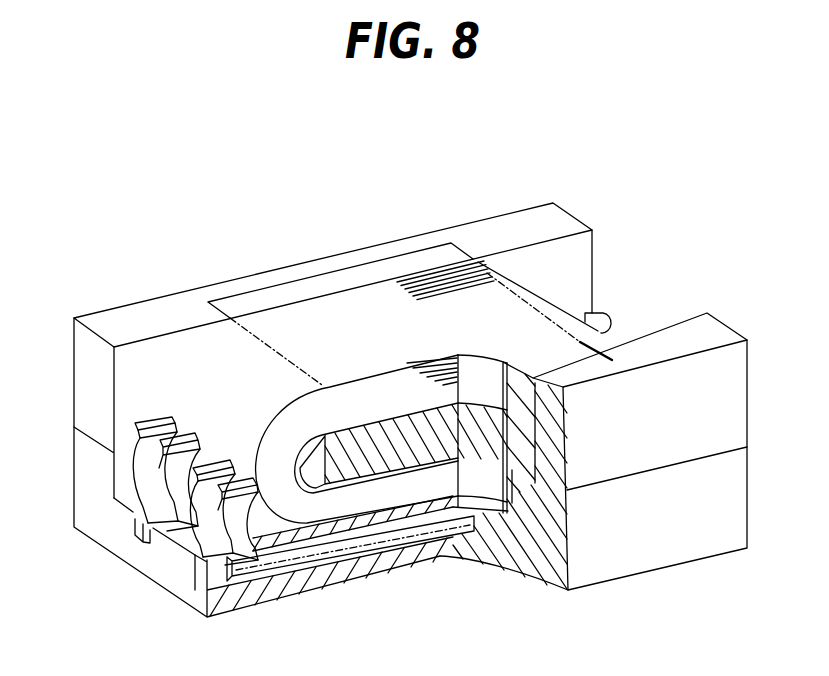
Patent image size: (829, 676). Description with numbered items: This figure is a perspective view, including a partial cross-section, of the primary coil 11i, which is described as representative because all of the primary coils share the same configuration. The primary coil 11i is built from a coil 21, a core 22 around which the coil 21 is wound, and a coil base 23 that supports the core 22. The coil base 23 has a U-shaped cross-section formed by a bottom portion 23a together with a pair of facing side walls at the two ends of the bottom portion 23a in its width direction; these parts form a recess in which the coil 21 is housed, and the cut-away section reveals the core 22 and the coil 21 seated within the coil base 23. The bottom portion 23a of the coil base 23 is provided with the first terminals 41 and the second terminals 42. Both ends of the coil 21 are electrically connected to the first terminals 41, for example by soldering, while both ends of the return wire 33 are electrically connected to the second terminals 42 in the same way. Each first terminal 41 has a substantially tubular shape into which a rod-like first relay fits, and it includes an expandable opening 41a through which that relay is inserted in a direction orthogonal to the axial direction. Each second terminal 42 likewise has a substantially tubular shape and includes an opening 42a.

The primary coil 11i is at (316, 247).
The coil 21 is at (483, 303).
The core 22 is at (413, 455).
The coil base 23 is at (653, 547).
The bottom portion 23a is at (147, 570).
The return wire 33 is at (318, 572).
The first terminal 41 is at (143, 480).
The expandable opening 41a is at (153, 435).
The second terminal 42 is at (203, 530).
The opening 42a is at (217, 458).